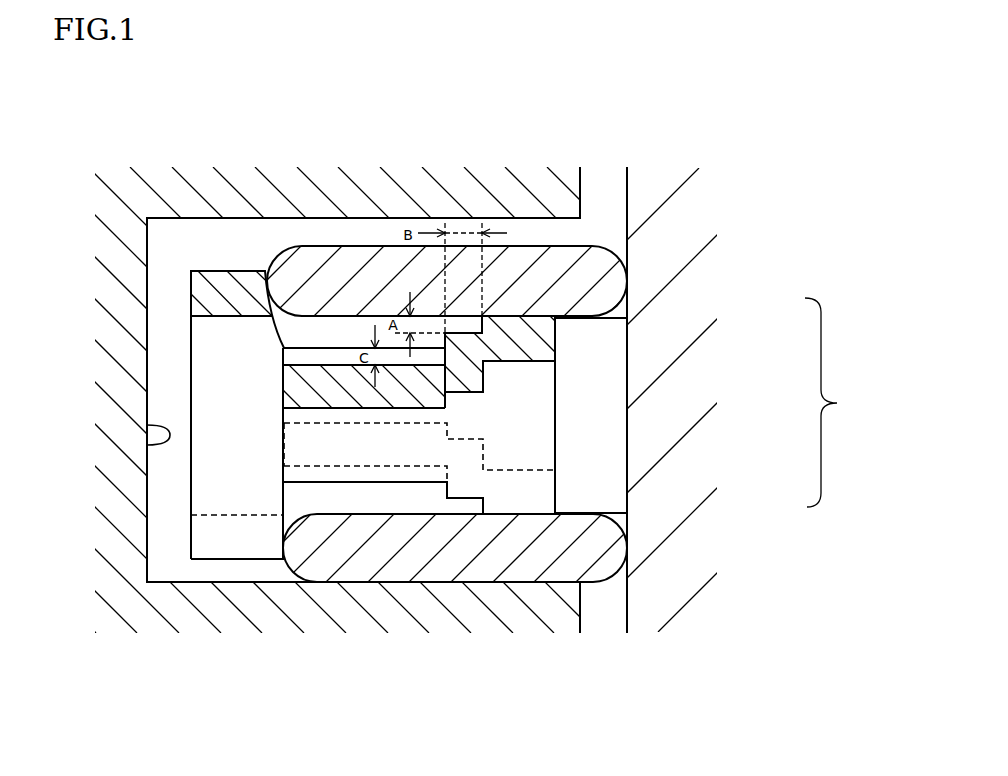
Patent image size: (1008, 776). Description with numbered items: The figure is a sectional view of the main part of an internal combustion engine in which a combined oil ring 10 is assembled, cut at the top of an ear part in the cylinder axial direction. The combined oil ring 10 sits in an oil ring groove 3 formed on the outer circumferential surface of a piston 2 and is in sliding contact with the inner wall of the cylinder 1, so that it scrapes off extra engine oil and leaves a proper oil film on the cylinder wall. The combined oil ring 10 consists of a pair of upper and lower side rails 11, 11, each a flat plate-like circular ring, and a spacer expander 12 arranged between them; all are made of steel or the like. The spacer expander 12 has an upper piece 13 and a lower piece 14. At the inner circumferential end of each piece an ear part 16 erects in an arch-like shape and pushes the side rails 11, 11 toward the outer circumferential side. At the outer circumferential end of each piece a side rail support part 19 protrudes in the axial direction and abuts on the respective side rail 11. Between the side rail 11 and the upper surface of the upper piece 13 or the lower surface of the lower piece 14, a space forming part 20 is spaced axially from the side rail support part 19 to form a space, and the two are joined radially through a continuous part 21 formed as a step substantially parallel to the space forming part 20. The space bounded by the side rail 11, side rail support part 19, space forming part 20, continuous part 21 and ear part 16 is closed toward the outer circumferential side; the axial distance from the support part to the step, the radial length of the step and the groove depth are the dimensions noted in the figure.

The cylinder 1 is at (670, 232).
The piston 2 is at (375, 195).
The oil ring groove 3 is at (147, 443).
The combined oil ring 10 is at (838, 402).
The side rail 11 is at (590, 277).
The spacer expander 12 is at (503, 422).
The upper piece 13 is at (558, 337).
The lower piece 14 is at (533, 495).
The ear part 16 is at (243, 271).
The side rail support part 19 is at (520, 310).
The space forming part 20 is at (343, 363).
The continuous part 21 is at (463, 350).